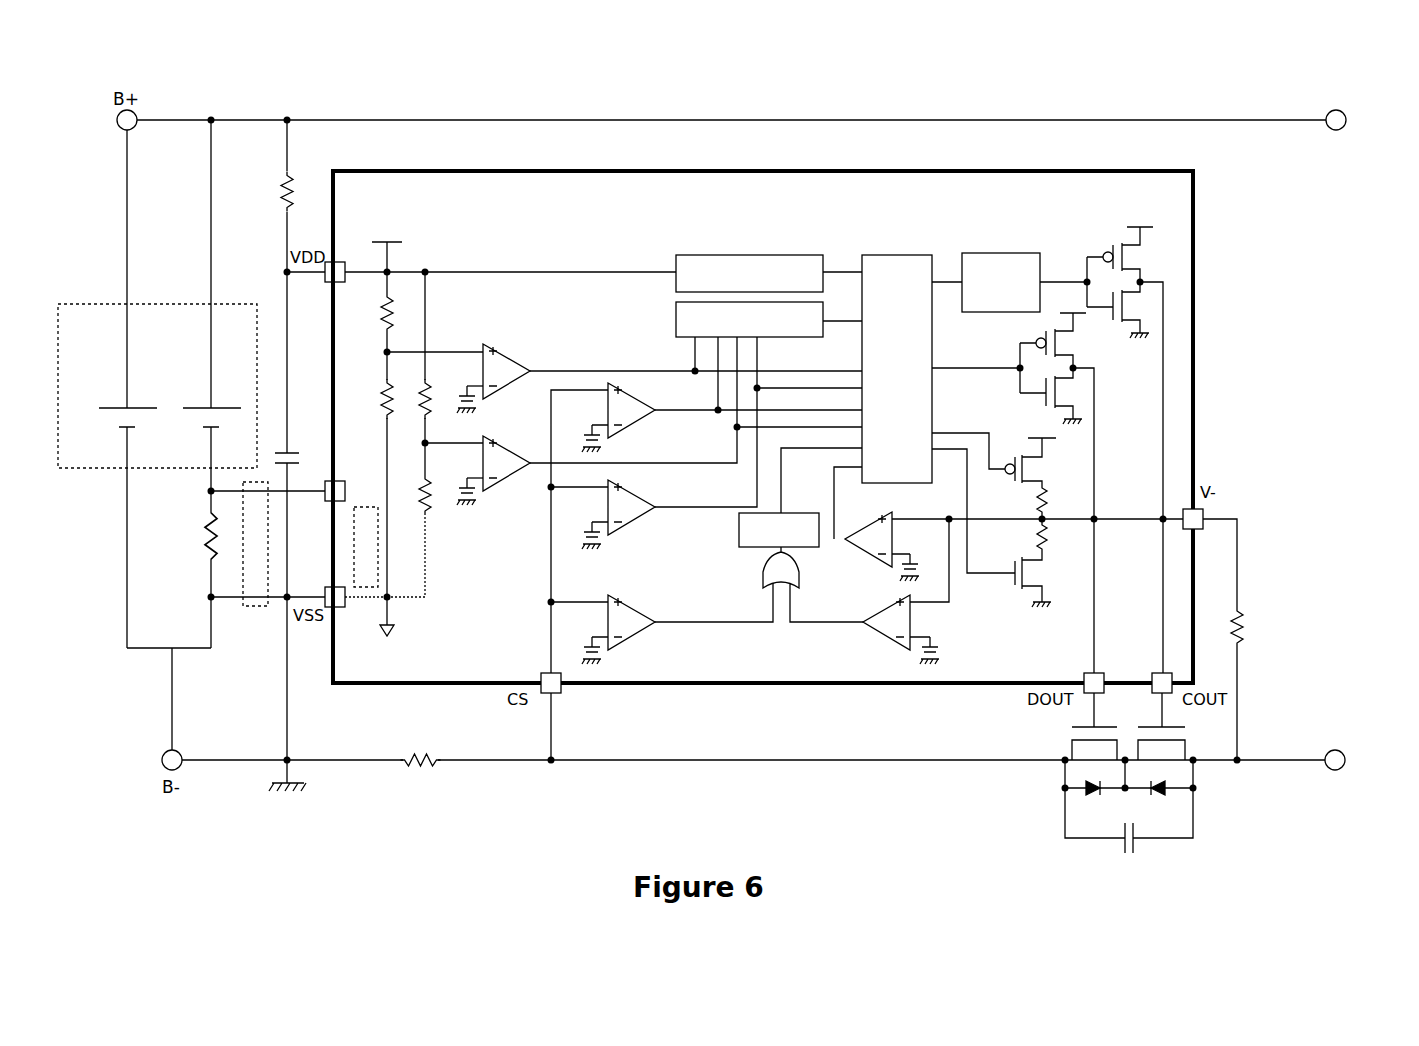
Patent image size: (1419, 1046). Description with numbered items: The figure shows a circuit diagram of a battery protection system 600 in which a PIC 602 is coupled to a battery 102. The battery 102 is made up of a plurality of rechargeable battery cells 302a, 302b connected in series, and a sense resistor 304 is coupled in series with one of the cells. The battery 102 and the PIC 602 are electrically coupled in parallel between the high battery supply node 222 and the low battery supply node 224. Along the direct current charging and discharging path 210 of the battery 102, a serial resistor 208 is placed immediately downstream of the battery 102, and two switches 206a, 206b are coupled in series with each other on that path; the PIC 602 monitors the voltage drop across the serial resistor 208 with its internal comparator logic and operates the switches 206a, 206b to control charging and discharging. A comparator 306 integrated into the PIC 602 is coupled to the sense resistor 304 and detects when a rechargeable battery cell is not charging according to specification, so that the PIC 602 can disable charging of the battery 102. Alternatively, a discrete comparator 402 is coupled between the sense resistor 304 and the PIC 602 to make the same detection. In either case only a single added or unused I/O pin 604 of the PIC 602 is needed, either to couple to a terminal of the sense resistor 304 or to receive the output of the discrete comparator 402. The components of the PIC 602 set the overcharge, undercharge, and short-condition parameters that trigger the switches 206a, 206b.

The battery protection system 600 is at (866, 70).
The PIC 602 is at (1180, 170).
The battery 102 is at (157, 386).
The rechargeable battery cell 302a is at (196, 441).
The rechargeable battery cell 302b is at (112, 519).
The sense resistor 304 is at (203, 541).
The discrete comparator 402 is at (268, 544).
The comparator 306 is at (366, 547).
The I/O pin 604 is at (345, 485).
The serial resistor 208 is at (403, 748).
The charging and discharging path 210 is at (245, 766).
The switch 206a is at (1068, 736).
The switch 206b is at (1196, 740).
The high battery supply node 222 is at (1345, 128).
The low battery supply node 224 is at (1344, 767).